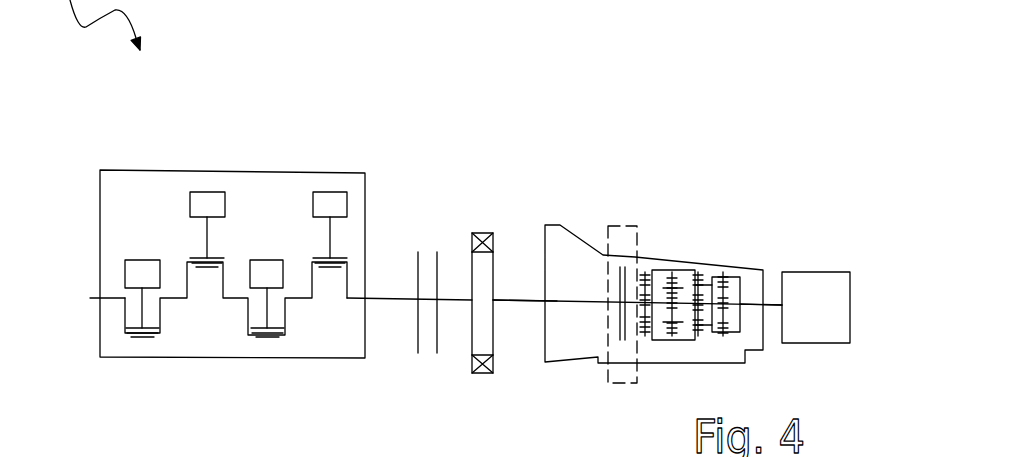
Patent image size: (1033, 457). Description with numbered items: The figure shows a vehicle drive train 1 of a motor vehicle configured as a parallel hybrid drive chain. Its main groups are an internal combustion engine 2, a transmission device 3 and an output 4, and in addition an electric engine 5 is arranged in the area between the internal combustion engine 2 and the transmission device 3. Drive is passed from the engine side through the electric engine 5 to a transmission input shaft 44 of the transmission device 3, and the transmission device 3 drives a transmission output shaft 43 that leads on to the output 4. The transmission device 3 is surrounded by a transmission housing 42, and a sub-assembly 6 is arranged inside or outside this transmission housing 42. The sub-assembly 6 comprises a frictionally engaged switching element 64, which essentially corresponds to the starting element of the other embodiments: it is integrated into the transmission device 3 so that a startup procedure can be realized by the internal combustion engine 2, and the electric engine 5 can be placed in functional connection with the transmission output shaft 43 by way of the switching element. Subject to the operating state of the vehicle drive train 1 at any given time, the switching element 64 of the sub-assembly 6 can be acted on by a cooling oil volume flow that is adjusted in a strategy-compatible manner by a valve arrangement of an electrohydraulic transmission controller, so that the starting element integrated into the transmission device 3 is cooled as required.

The vehicle drive train 1 is at (135, 448).
The internal combustion engine 2 is at (165, 187).
The transmission device 3 is at (550, 220).
The output 4 is at (813, 290).
The electric engine 5 is at (478, 318).
The sub-assembly 6 is at (618, 223).
The transmission housing 42 is at (647, 258).
The transmission output shaft 43 is at (753, 302).
The transmission input shaft 44 is at (557, 300).
The switching element 64 is at (620, 290).